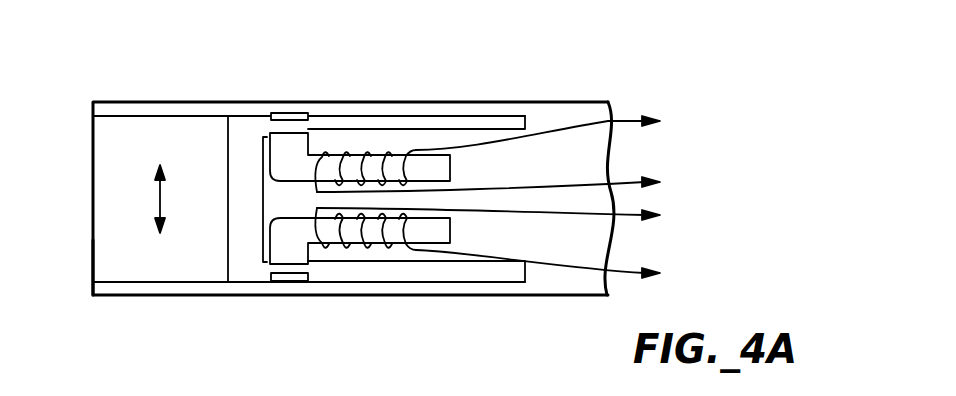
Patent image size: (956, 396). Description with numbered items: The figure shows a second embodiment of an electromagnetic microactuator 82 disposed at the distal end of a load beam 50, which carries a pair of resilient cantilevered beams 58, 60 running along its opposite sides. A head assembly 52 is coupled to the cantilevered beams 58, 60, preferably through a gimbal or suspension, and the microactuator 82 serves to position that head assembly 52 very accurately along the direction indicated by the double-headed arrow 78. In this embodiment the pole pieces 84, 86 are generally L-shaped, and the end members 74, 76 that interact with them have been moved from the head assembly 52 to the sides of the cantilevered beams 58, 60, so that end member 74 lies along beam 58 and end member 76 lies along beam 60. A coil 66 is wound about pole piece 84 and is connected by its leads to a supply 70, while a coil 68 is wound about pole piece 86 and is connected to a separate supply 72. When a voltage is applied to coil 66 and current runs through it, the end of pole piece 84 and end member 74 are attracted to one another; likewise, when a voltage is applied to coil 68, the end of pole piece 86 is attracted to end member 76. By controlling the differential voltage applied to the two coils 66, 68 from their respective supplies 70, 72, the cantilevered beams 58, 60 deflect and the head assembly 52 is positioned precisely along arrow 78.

The load beam 50 is at (532, 283).
The head assembly 52 is at (86, 272).
The cantilevered beam 58 is at (497, 104).
The cantilevered beam 60 is at (415, 285).
The coil 66 is at (385, 152).
The coil 68 is at (345, 250).
The supply 70 is at (703, 151).
The supply 72 is at (703, 244).
The end member 74 is at (292, 112).
The end member 76 is at (288, 282).
The arrow 78 is at (160, 198).
The microactuator 82 is at (353, 80).
The pole piece 84 is at (287, 143).
The pole piece 86 is at (287, 255).